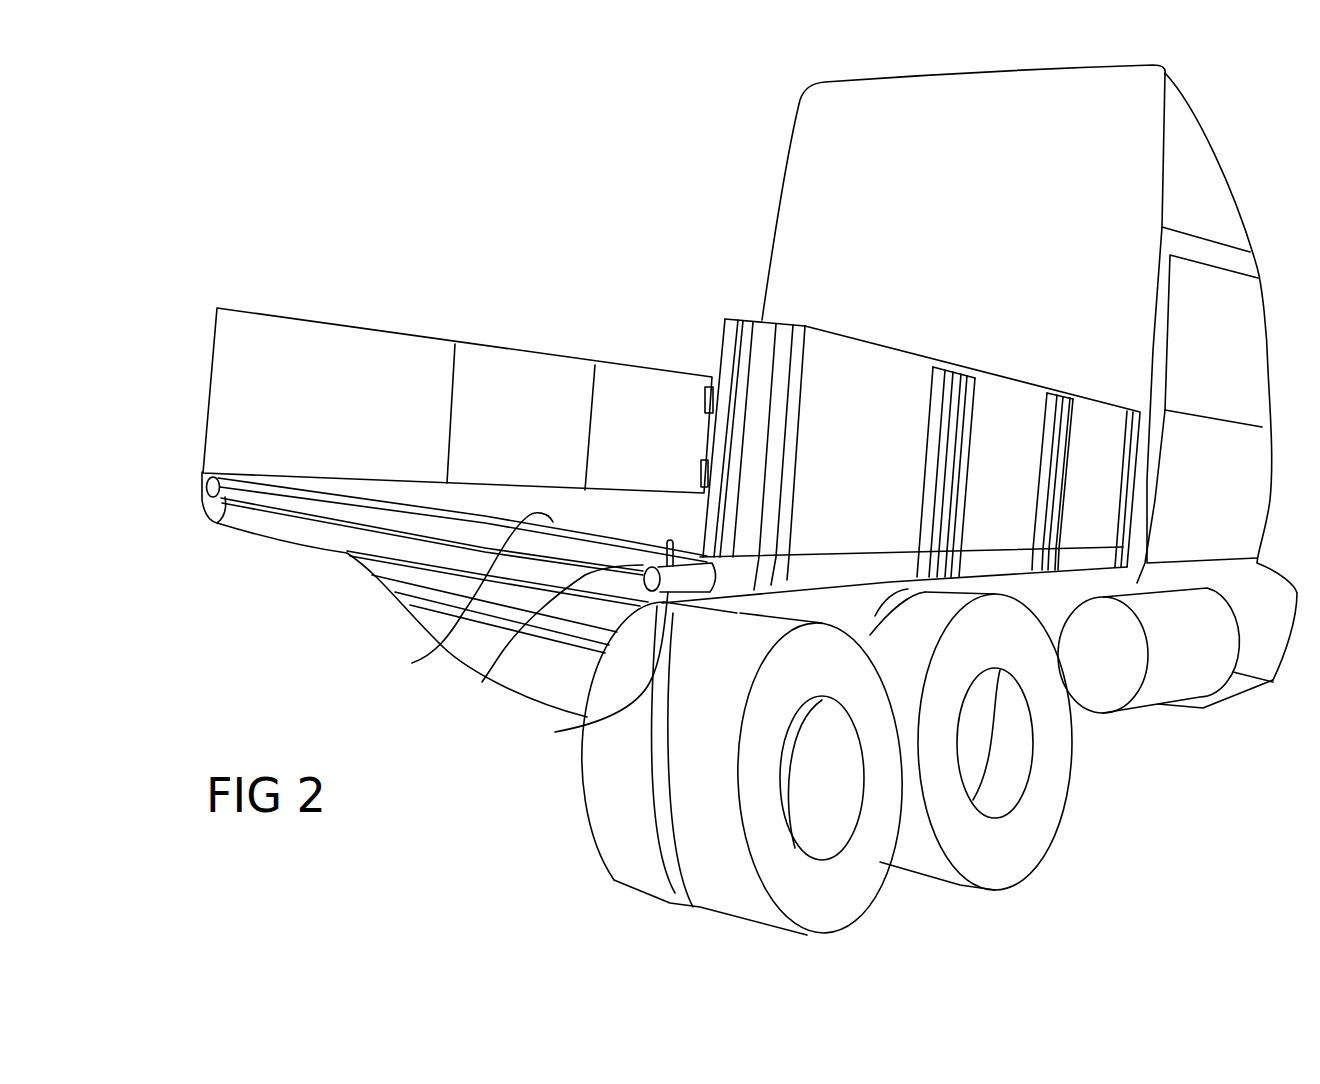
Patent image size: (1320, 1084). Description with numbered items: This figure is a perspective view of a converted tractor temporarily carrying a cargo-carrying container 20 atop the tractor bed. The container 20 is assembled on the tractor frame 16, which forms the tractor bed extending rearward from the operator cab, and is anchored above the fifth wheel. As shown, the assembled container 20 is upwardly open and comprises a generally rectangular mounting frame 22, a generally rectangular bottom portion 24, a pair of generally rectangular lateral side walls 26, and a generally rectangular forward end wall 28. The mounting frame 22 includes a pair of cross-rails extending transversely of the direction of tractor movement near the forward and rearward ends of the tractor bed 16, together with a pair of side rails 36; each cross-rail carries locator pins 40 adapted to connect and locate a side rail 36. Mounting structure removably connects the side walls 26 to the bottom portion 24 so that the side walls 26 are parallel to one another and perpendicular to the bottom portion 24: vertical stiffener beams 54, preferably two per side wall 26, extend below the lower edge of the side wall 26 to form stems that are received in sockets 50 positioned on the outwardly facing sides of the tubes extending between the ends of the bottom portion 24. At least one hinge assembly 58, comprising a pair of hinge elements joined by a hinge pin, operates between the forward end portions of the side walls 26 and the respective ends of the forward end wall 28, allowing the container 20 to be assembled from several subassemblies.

The cargo-carrying container 20 is at (160, 383).
The frame 16 is at (347, 553).
The mounting frame 22 is at (207, 485).
The bottom portion 24 is at (466, 596).
The lateral side walls 26 is at (395, 332).
The forward end wall 28 is at (720, 377).
The side rails 36 is at (591, 670).
The locator pins 40 is at (217, 523).
The sockets 50 is at (787, 563).
The vertical stiffener beam 54 is at (800, 365).
The hinge assembly 58 is at (702, 473).